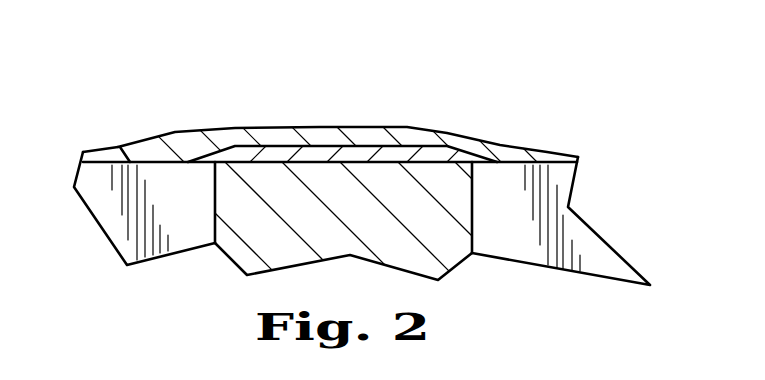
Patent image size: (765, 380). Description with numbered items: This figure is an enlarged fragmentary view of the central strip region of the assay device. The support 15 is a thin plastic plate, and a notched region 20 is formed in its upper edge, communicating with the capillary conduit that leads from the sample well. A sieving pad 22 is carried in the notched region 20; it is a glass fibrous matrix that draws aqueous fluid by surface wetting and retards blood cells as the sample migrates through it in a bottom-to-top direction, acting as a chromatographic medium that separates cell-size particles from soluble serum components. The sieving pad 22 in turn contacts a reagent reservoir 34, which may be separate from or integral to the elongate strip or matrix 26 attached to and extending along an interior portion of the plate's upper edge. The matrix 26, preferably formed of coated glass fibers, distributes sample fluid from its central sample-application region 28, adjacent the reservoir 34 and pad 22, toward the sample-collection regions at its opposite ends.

The support 15 is at (577, 187).
The notched region 20 is at (447, 268).
The sieving pad 22 is at (448, 247).
The elongate strip or matrix 26 is at (507, 148).
The central sample-application region 28 is at (420, 120).
The reagent reservoir 34 is at (308, 153).